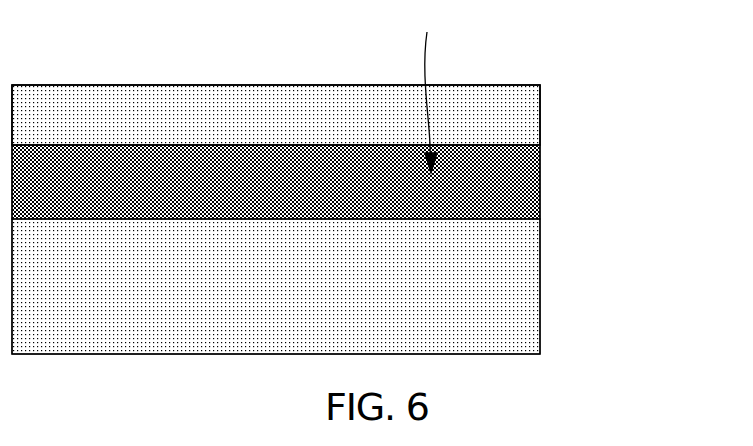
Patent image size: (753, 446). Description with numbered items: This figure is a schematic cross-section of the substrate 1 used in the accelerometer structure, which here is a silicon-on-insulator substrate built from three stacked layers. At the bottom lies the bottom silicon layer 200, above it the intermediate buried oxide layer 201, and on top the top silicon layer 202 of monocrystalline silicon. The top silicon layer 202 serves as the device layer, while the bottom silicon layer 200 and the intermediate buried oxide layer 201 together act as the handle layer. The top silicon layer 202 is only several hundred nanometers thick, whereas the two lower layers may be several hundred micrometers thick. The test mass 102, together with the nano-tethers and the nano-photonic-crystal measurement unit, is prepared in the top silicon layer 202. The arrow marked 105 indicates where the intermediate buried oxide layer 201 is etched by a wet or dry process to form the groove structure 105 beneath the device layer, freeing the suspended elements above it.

The substrate 1 is at (677, 116).
The test mass 102 is at (275, 117).
The groove structure 105 is at (430, 91).
The bottom silicon layer 200 is at (505, 252).
The intermediate buried oxide layer 201 is at (500, 182).
The top silicon layer 202 is at (500, 120).